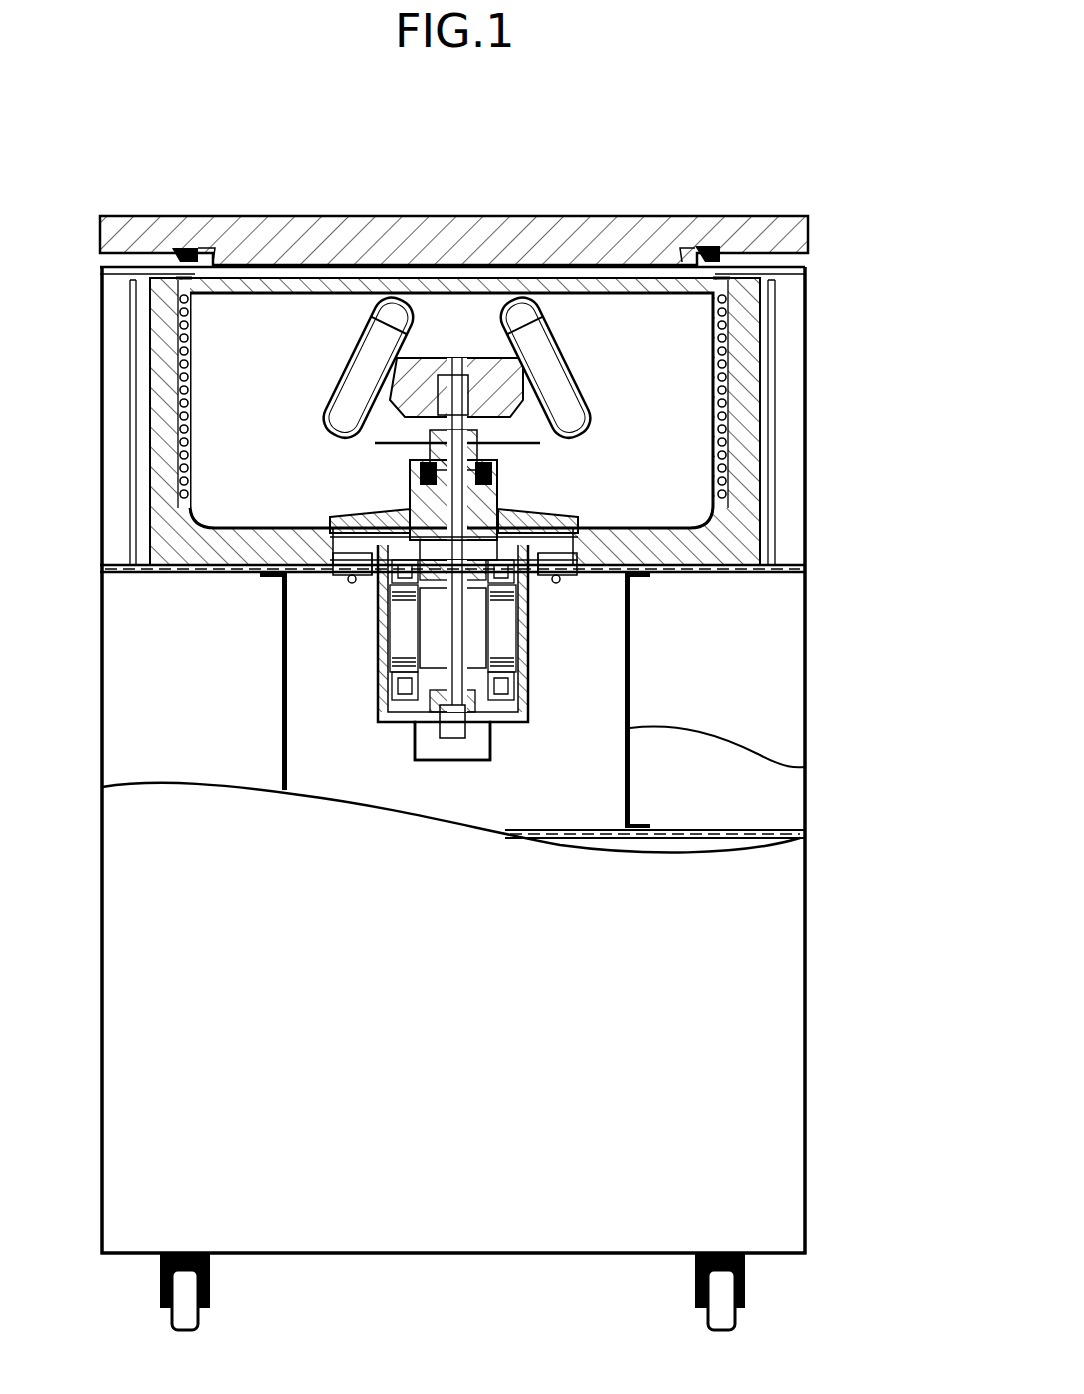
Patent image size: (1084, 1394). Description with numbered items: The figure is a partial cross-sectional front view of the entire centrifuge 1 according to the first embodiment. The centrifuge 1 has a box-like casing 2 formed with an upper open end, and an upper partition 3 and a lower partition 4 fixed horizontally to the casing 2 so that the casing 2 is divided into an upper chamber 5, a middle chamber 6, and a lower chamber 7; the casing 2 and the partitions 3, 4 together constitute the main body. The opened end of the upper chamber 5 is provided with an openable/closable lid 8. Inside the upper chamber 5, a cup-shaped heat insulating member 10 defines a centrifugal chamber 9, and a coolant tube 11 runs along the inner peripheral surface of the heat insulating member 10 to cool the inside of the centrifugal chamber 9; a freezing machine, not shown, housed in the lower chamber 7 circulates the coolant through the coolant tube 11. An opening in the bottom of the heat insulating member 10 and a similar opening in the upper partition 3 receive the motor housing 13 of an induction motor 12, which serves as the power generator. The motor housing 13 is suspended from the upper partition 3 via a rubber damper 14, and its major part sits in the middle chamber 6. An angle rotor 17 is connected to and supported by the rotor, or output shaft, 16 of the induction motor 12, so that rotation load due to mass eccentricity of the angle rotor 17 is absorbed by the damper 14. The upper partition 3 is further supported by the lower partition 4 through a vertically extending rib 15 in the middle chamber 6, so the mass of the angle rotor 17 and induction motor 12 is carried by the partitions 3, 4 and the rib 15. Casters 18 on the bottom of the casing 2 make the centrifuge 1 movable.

The centrifuge 1 is at (836, 164).
The casing 2 is at (808, 702).
The upper partition 3 is at (723, 572).
The lower partition 4 is at (743, 832).
The upper chamber 5 is at (790, 398).
The middle chamber 6 is at (752, 651).
The lower chamber 7 is at (760, 1025).
The lid 8 is at (525, 222).
The centrifugal chamber 9 is at (295, 330).
The heat insulating member 10 is at (742, 528).
The coolant tube 11 is at (738, 385).
The induction motor 12 is at (505, 723).
The motor housing 13 is at (380, 690).
The damper 14 is at (344, 580).
The rib 15 is at (805, 767).
The rotor (output shaft) 16 is at (410, 520).
The angle rotor 17 is at (553, 358).
The casters 18 is at (722, 1312).